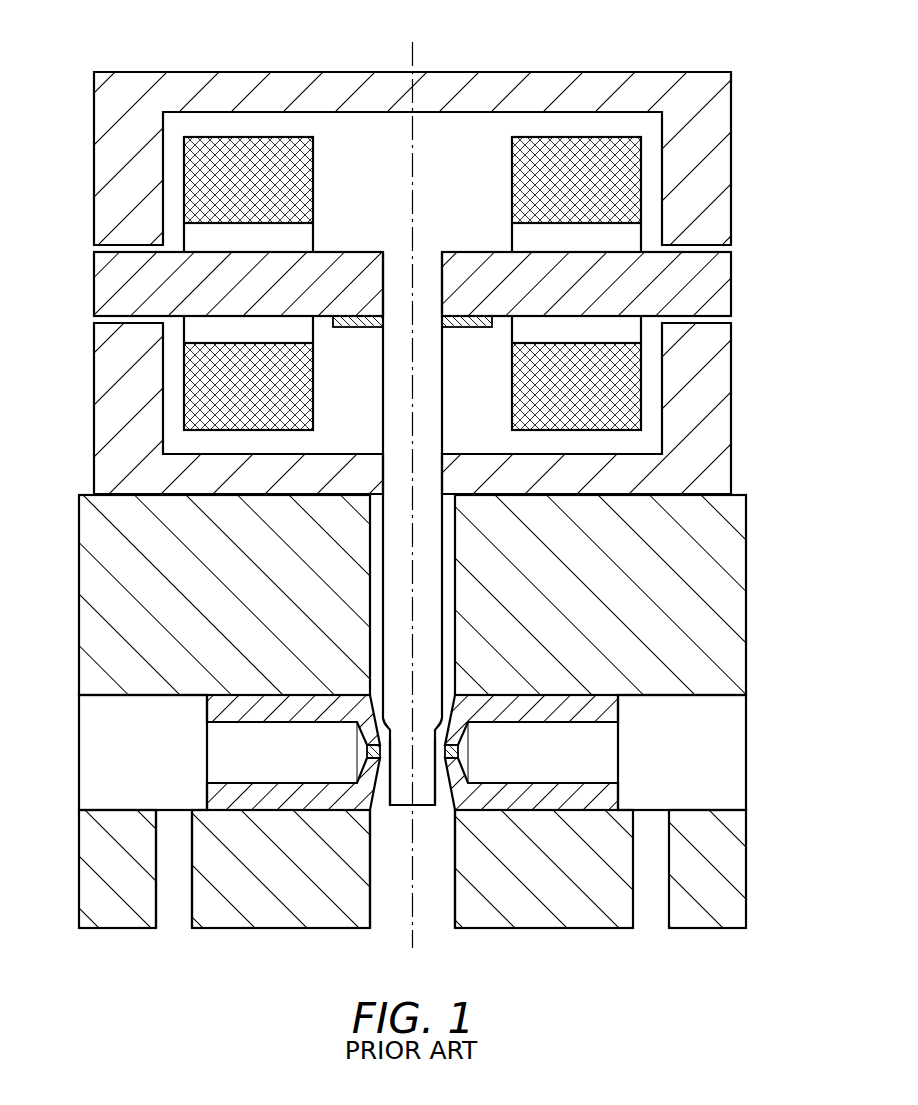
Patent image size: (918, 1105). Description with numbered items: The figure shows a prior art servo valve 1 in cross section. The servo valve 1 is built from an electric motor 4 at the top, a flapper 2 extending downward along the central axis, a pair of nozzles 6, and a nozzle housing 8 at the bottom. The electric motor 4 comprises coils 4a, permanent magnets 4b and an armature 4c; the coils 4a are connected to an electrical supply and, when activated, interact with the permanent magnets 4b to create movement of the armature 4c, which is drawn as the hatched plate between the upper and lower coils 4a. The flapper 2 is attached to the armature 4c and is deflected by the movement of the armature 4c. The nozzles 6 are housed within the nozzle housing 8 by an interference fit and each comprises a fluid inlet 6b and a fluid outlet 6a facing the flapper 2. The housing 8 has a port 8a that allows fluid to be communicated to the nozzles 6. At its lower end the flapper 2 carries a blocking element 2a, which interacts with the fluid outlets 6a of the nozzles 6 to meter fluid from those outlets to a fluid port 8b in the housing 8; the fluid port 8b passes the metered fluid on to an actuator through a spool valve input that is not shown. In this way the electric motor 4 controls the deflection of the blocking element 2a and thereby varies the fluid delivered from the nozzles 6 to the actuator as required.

The servo valve 1 is at (83, 54).
The flapper 2 is at (430, 552).
The blocking element 2a is at (405, 762).
The electric motor 4 is at (435, 252).
The coils 4a is at (511, 178).
The permanent magnets 4b is at (718, 160).
The armature 4c is at (718, 281).
The nozzles 6 is at (385, 752).
The fluid outlet 6a is at (367, 750).
The fluid inlet 6b is at (221, 751).
The nozzle housing 8 is at (392, 738).
The port 8a is at (172, 915).
The fluid port 8b is at (389, 915).